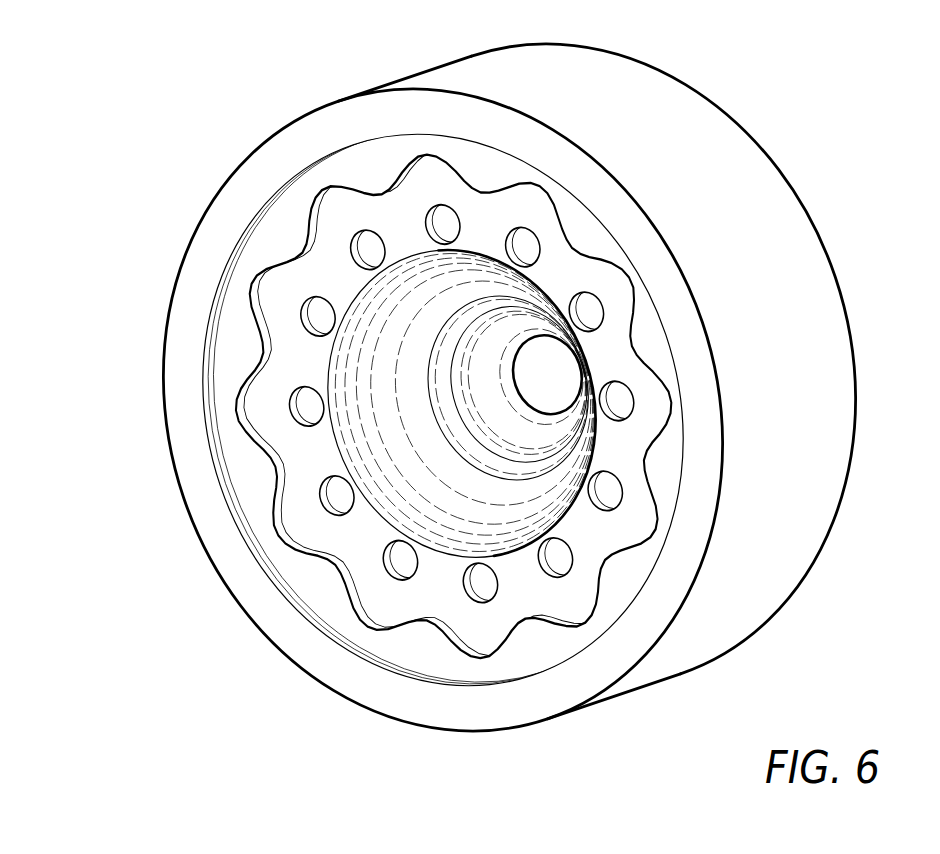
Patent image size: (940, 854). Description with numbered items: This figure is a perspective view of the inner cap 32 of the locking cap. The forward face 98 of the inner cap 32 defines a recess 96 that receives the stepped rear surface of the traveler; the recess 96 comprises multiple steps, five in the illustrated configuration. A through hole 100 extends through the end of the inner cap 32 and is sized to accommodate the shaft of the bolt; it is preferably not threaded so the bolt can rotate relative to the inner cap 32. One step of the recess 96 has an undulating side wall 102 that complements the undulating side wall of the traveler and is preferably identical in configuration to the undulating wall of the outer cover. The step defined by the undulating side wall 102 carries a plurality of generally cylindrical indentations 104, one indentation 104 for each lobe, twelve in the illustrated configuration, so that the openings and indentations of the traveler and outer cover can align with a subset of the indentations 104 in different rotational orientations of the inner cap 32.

The inner cap 32 is at (838, 187).
The recess 96 is at (440, 458).
The forward face 98 is at (427, 710).
The through hole 100 is at (540, 362).
The undulating side wall 102 is at (252, 432).
The cylindrical indentations 104 is at (312, 405).